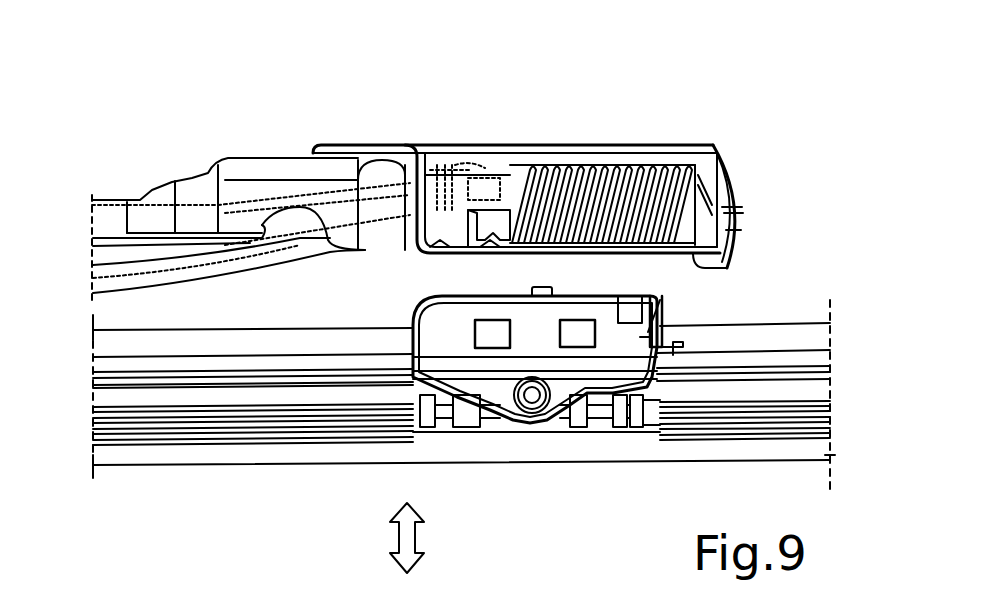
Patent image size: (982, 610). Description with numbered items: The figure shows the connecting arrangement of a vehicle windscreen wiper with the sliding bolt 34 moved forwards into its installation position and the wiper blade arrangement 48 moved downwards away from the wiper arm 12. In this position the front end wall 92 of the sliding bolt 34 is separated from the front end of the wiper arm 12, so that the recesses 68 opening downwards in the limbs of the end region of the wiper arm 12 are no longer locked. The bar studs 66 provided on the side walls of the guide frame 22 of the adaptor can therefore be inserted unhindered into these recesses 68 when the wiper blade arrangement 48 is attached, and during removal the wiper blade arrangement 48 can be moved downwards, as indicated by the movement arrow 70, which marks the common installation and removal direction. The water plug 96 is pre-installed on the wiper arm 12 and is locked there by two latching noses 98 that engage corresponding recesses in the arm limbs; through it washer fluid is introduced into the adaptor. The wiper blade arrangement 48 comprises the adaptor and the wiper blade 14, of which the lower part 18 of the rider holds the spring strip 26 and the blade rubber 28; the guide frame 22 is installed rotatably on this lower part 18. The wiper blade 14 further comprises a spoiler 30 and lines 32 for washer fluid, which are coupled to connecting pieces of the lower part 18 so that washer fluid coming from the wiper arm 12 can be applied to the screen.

The wiper arm 12 is at (146, 180).
The wiper blade 14 is at (295, 492).
The lower part 18 is at (575, 414).
The guide frame 22 is at (665, 327).
The spring strip 26 is at (650, 412).
The blade rubber 28 is at (720, 430).
The spoiler 30 is at (373, 347).
The lines 32 is at (180, 397).
The sliding bolt 34 is at (597, 108).
The wiper blade arrangement 48 is at (317, 312).
The bar studs 66 is at (492, 348).
The recesses 68 is at (490, 222).
The movement arrow 70 is at (415, 533).
The front end wall 92 is at (737, 192).
The water plug 96 is at (500, 195).
The latching noses 98 is at (650, 180).